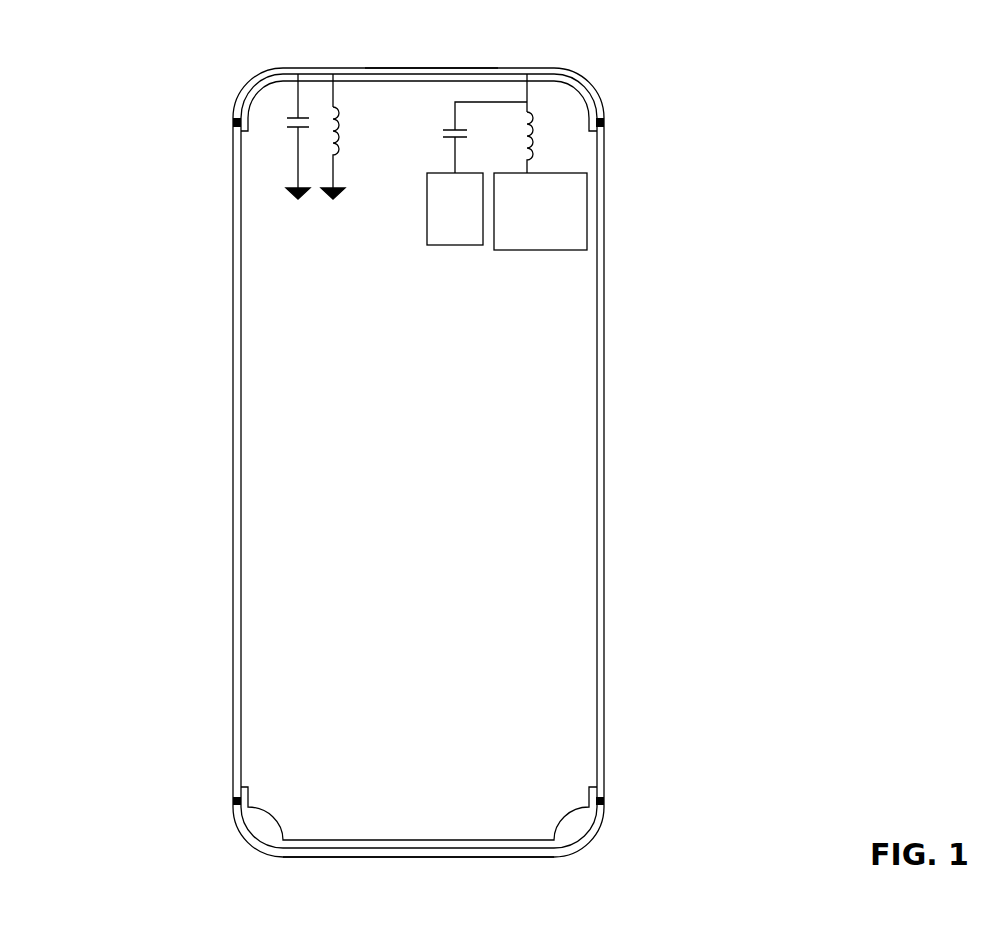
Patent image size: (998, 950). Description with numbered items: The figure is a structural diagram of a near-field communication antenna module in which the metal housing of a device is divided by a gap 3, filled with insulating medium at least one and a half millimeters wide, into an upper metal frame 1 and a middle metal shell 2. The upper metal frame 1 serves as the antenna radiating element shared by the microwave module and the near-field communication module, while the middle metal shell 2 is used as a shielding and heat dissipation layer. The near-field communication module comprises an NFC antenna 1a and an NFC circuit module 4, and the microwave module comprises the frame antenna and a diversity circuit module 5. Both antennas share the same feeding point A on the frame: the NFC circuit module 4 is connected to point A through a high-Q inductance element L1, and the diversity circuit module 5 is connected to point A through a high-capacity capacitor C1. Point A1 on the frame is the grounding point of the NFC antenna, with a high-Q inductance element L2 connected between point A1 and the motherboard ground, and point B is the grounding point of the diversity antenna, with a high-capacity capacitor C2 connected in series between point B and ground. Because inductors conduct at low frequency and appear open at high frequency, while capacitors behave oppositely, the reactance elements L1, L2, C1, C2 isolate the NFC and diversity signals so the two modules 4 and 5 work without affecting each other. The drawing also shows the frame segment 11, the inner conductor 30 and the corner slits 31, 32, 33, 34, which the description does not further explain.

The upper metal frame 1 is at (590, 84).
The NFC antenna 1a is at (498, 68).
The middle metal shell 2 is at (413, 465).
The gap 3 is at (247, 90).
The NFC circuit module 4 is at (525, 250).
The diversity circuit module 5 is at (427, 228).
The frame bottom segment 11 is at (520, 853).
The bottom inner conductor 30 is at (357, 842).
The first slit 31 is at (233, 130).
The second slit 32 is at (603, 132).
The third slit 33 is at (605, 795).
The fourth slit 34 is at (237, 800).
The feeding point A is at (527, 72).
The grounding point of the NFC antenna A1 is at (333, 74).
The grounding point of the diversity antenna B is at (298, 74).
The high-capacity capacitor C1 is at (468, 137).
The high-capacity capacitor C2 is at (281, 158).
The high-Q inductance element L1 is at (548, 142).
The high-Q inductance element L2 is at (352, 153).